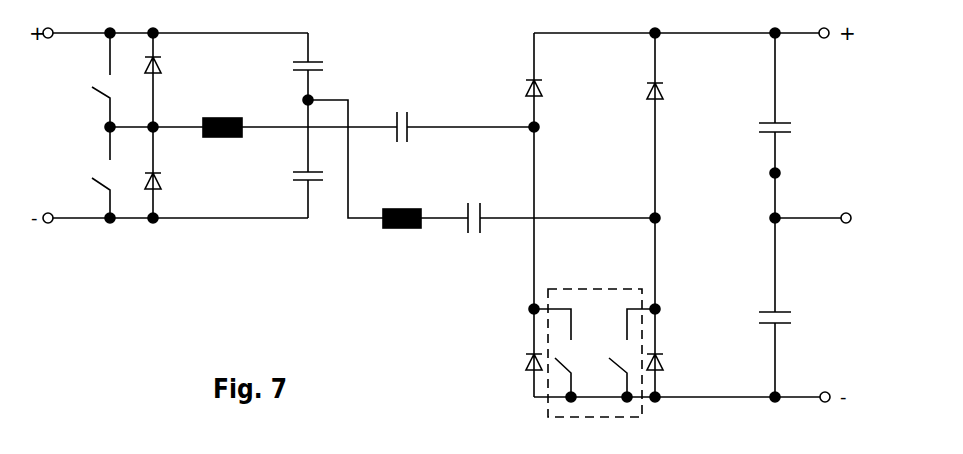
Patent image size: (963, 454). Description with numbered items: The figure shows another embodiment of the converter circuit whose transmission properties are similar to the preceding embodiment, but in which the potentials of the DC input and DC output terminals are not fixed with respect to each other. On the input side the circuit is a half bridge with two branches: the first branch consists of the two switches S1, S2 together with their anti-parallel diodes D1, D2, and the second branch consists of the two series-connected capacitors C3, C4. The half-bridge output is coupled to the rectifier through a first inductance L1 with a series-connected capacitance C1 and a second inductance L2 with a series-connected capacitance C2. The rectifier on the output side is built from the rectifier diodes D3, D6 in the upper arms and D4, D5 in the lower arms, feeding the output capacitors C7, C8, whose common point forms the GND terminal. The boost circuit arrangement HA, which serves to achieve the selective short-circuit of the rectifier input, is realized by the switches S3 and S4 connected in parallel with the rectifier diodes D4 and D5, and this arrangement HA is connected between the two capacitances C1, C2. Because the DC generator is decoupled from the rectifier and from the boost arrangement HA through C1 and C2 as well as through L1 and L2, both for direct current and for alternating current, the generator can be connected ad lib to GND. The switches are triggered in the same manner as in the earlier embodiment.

The switch S1 is at (92, 80).
The switch S2 is at (91, 172).
The switch S3 is at (559, 325).
The switch S4 is at (632, 325).
The anti-parallel diode D1 is at (171, 80).
The anti-parallel diode D2 is at (171, 172).
The rectifier diode D3 is at (514, 80).
The rectifier diode D4 is at (518, 353).
The rectifier diode D5 is at (669, 353).
The rectifier diode D6 is at (675, 125).
The first inductance L1 is at (222, 112).
The second inductance L2 is at (402, 204).
The capacitance C1 is at (420, 118).
The capacitance C2 is at (538, 208).
The series-connected capacitor C3 is at (324, 66).
The series-connected capacitor C4 is at (291, 159).
The output capacitor C7 is at (794, 125).
The output capacitor C8 is at (795, 307).
The ground GND is at (840, 219).
The boost circuit arrangement HA is at (545, 288).